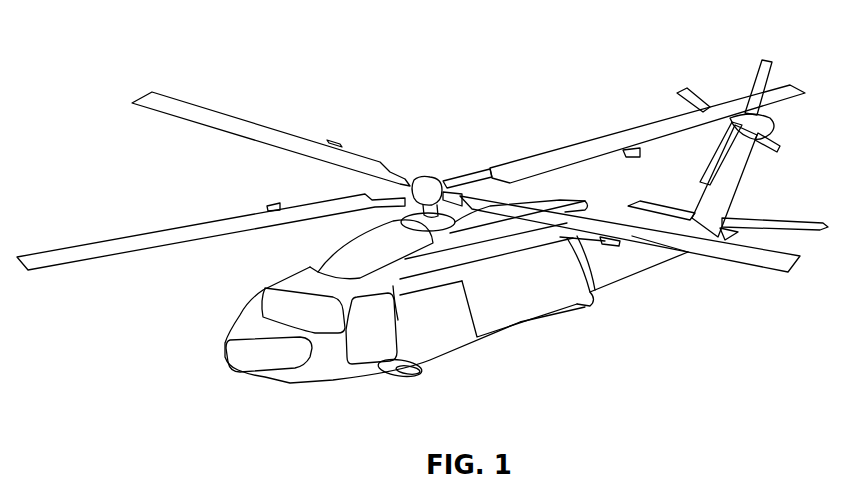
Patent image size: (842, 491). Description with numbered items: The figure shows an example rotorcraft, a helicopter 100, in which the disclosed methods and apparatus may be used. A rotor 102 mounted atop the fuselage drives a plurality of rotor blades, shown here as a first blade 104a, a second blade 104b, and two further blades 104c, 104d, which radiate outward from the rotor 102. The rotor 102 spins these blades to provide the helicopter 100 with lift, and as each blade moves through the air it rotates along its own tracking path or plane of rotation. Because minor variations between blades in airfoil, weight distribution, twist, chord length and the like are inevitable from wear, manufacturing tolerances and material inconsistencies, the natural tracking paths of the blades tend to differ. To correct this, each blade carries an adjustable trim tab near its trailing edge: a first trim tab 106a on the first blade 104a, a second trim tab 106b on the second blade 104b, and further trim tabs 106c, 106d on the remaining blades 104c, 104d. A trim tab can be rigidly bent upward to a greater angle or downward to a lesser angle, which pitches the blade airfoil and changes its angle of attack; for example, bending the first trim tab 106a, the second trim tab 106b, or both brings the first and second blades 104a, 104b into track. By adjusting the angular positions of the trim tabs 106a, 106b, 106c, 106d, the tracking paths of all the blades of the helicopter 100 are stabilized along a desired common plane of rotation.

The helicopter 100 is at (243, 372).
The rotor 102 is at (420, 179).
The first rotor blade 104a is at (152, 96).
The second rotor blade 104b is at (25, 257).
The rotor blade 104c is at (770, 271).
The rotor blade 104d is at (543, 153).
The first trim tab 106a is at (336, 142).
The second trim tab 106b is at (272, 205).
The trim tab 106c is at (608, 245).
The trim tab 106d is at (637, 151).